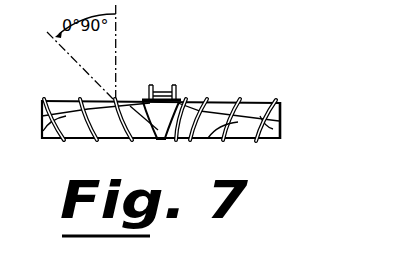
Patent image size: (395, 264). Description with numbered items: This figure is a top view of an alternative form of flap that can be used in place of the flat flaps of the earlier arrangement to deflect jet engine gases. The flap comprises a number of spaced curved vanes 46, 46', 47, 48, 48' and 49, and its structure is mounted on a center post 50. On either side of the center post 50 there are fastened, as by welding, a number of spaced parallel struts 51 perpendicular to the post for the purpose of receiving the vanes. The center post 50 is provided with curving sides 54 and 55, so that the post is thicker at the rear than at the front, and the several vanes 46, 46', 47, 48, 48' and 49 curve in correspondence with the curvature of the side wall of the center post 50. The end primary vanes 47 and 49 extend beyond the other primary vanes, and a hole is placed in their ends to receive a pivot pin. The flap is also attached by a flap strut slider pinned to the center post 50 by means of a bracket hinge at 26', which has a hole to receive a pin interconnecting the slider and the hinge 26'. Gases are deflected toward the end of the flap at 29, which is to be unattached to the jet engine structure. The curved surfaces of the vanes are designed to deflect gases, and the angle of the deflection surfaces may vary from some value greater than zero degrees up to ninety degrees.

The primary vane 47 is at (42, 112).
The end of the flap 29 is at (156, 111).
The bracket hinge 26' is at (183, 85).
The curving side 55 is at (184, 103).
The parallel struts 51 is at (281, 122).
The primary vane 49 is at (255, 142).
The primary vane 48' is at (215, 131).
The primary vane 48 is at (175, 131).
The center post 50 is at (156, 140).
The primary vane 46 is at (117, 132).
The primary vane 46' is at (70, 132).
The curving side 54 is at (149, 140).